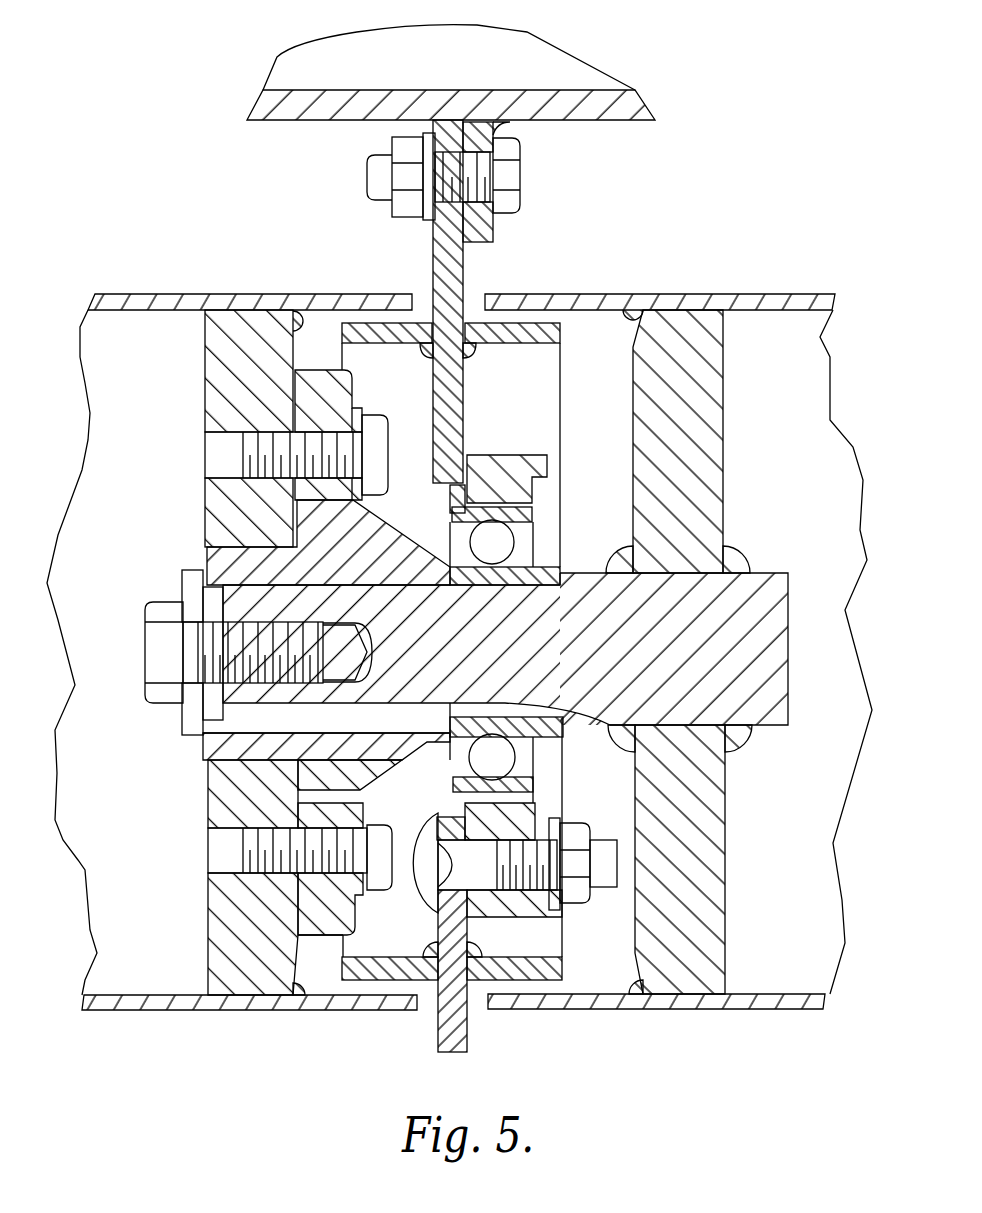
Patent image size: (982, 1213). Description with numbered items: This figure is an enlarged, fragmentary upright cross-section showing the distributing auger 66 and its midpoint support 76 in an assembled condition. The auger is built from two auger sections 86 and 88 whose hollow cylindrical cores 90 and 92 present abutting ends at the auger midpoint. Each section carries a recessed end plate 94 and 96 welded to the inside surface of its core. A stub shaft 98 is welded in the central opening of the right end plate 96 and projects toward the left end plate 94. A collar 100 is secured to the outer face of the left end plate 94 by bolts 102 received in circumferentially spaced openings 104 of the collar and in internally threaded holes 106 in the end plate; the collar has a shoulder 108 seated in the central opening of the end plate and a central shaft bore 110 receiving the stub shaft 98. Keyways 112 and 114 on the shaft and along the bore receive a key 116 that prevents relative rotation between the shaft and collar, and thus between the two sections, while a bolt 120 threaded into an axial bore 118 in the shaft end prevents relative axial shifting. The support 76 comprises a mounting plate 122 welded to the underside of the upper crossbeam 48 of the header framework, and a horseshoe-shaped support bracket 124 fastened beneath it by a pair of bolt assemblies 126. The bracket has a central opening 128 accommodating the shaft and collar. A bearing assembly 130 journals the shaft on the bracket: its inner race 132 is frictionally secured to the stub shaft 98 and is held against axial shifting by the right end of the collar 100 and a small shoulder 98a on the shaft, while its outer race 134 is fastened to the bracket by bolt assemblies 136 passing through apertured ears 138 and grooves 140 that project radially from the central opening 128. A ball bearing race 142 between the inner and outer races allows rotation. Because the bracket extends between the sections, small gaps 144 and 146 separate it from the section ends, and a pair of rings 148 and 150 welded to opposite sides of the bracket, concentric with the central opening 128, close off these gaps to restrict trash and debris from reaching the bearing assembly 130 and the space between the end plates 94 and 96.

The upper crossbeam 48 is at (557, 53).
The distributing auger 66 is at (714, 285).
The support 76 is at (472, 269).
The auger section 86 is at (105, 397).
The auger section 88 is at (818, 370).
The cylindrical core 90 is at (187, 300).
The cylindrical core 92 is at (788, 295).
The end plate 94 is at (212, 353).
The end plate 96 is at (707, 382).
The stub shaft 98 is at (777, 583).
The shoulder 98a is at (562, 573).
The collar 100 is at (362, 540).
The bolts 102 is at (250, 846).
The openings 104 is at (353, 415).
The internally threaded holes 106 is at (215, 475).
The shoulder 108 is at (213, 747).
The shaft bore 110 is at (213, 593).
The keyway 112 is at (517, 705).
The keyway 114 is at (387, 723).
The key 116 is at (373, 713).
The axial bore 118 is at (355, 632).
The bolt 120 is at (163, 645).
The mounting plate 122 is at (488, 228).
The support bracket 124 is at (443, 1033).
The bolt assemblies 126 is at (512, 147).
The central opening 128 is at (443, 497).
The bearing assembly 130 is at (539, 779).
The inner race 132 is at (553, 570).
The outer race 134 is at (483, 462).
The bolt assemblies 136 is at (573, 837).
The apertured ears 138 is at (537, 907).
The grooves 140 is at (448, 826).
The ball bearing race 142 is at (480, 547).
The gap 144 is at (423, 293).
The gap 146 is at (475, 293).
The ring 148 is at (370, 972).
The ring 150 is at (530, 967).